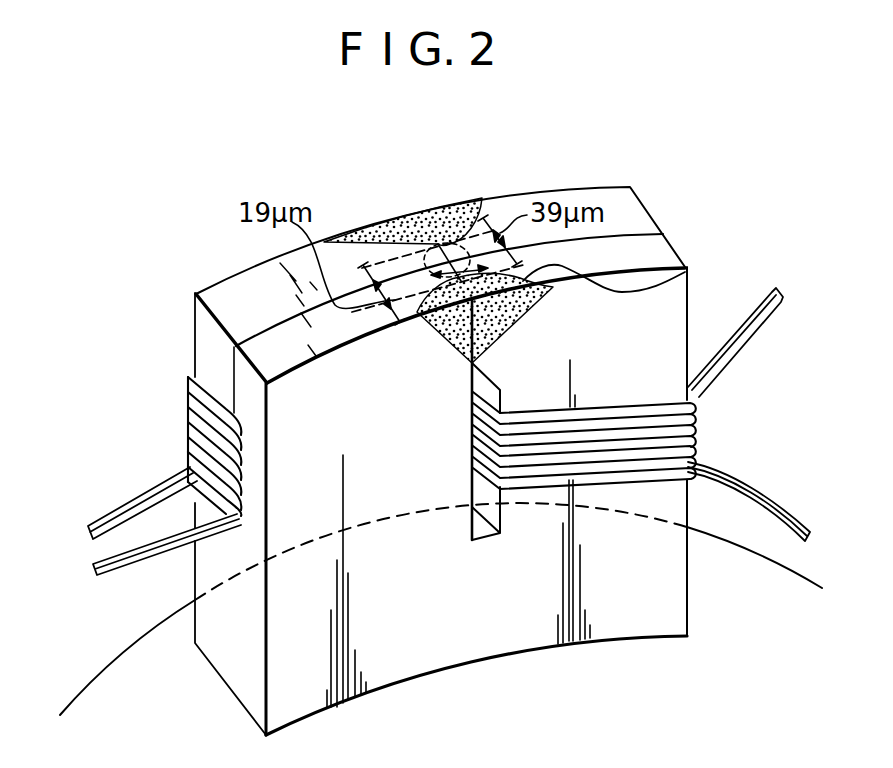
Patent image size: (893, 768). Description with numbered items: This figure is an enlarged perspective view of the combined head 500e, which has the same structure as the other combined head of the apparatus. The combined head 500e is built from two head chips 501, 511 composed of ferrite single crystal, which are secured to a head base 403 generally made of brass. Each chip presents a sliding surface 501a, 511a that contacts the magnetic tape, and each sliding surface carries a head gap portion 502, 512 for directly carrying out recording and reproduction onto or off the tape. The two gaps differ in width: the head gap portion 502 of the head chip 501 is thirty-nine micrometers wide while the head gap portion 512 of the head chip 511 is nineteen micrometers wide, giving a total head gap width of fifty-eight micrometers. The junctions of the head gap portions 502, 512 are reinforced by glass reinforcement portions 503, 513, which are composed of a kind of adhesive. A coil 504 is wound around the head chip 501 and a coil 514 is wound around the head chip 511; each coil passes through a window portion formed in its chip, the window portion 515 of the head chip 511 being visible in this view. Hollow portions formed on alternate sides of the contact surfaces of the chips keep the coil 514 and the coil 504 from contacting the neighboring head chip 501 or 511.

The combined head 500e is at (591, 188).
The head chip 501 is at (201, 342).
The sliding surface 501a is at (617, 197).
The head gap portion 502 is at (423, 243).
The glass reinforcement portion 503 is at (450, 203).
The coil 504 is at (188, 408).
The head chip 511 is at (658, 323).
The sliding surface 511a is at (658, 250).
The head gap portion 512 is at (461, 281).
The glass reinforcement portion 513 is at (685, 278).
The coil 514 is at (692, 427).
The window portion 515 is at (482, 530).
The head base 403 is at (123, 670).